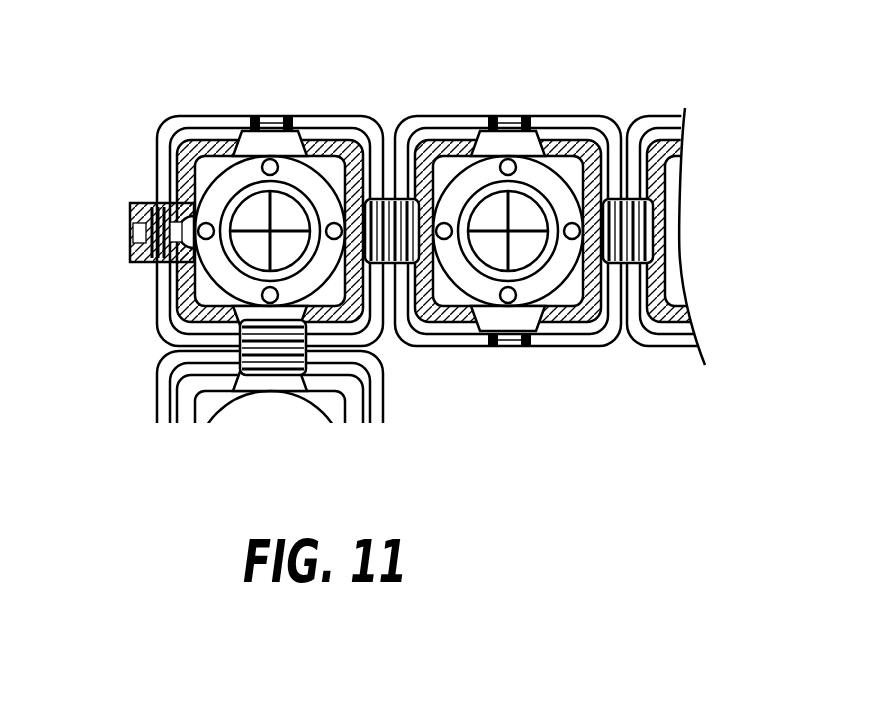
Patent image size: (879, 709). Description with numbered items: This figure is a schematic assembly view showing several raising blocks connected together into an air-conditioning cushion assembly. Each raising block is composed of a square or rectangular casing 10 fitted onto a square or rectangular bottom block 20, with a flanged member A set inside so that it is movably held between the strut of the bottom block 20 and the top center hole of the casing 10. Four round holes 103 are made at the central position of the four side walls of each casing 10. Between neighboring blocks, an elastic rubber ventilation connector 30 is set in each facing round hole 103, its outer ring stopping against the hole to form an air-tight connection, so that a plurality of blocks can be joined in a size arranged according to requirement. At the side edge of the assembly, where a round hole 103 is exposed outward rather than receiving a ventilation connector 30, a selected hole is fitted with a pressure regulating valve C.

The casing 10 is at (340, 140).
The bottom block 20 is at (367, 130).
The elastic rubber ventilation connector 30 is at (640, 140).
The round hole 103 is at (265, 128).
The flanged member A is at (313, 138).
The pressure regulating valve C is at (128, 207).